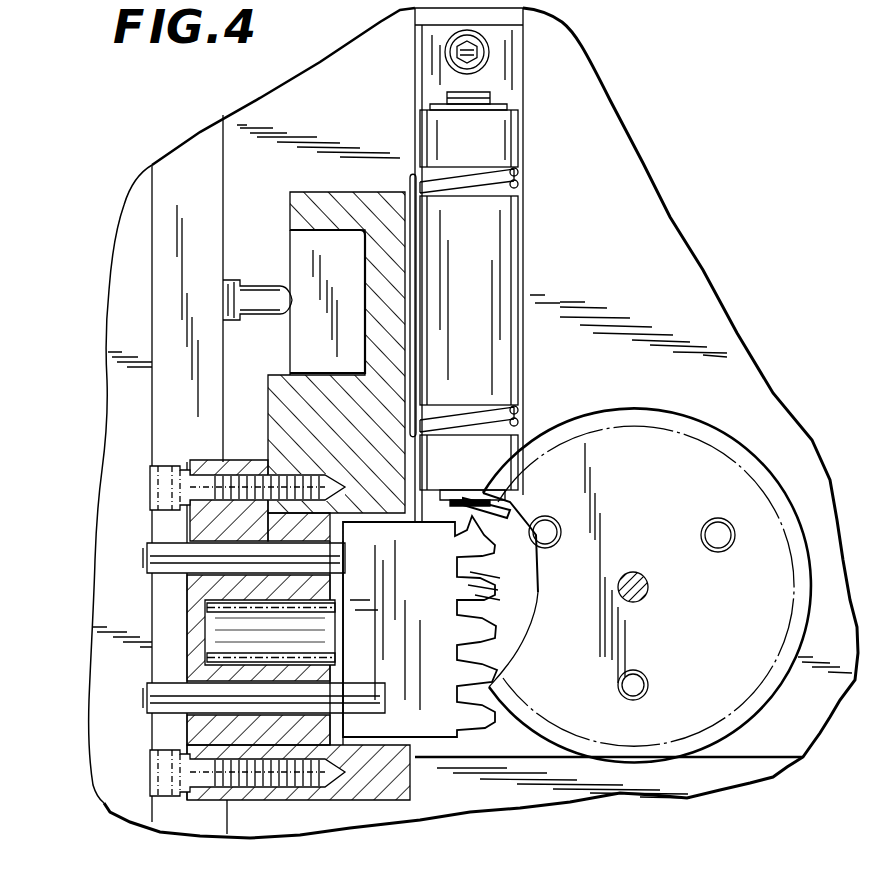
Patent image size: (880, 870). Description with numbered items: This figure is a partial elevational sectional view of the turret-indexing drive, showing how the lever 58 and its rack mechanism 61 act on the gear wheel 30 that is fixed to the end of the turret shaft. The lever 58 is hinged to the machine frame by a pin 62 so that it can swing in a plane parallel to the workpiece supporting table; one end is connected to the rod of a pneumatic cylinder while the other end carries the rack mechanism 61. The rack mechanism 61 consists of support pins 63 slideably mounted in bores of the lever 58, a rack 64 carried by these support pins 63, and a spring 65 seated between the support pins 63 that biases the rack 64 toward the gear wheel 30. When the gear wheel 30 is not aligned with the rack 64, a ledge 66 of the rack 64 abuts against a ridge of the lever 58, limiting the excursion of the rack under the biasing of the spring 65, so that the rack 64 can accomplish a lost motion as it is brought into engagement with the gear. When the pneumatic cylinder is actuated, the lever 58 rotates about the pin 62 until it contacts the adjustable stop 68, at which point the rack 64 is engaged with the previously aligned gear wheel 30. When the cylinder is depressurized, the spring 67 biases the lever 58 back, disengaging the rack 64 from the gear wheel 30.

The gear wheel 30 is at (678, 415).
The lever 58 is at (332, 200).
The rack mechanism 61 is at (100, 672).
The pin 62 is at (482, 97).
The support pins 63 is at (157, 556).
The rack 64 is at (430, 740).
The spring 65 is at (222, 613).
The ledge 66 is at (376, 552).
The spring 67 is at (412, 245).
The adjustable stop 68 is at (264, 298).